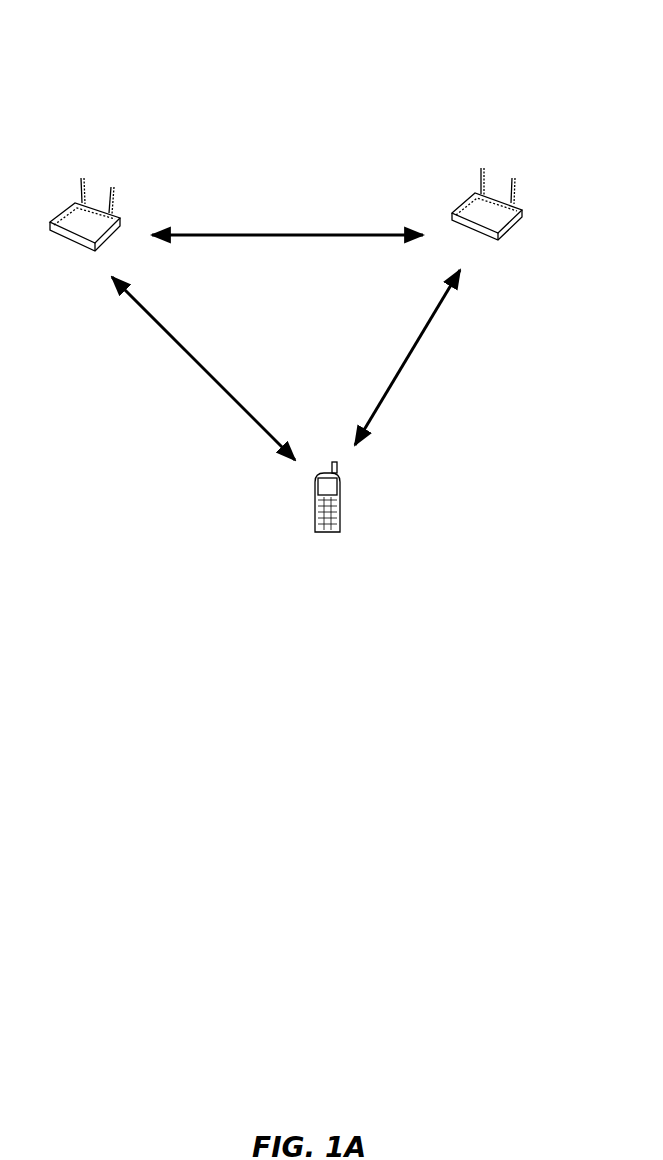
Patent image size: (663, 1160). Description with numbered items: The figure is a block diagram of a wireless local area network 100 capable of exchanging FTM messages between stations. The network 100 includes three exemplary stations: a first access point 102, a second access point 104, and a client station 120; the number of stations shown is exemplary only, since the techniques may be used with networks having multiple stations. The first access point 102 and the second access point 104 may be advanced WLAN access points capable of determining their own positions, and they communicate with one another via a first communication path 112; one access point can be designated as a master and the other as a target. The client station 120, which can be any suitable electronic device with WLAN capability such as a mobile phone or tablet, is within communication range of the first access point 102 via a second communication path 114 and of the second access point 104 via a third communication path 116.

The network 100 is at (78, 46).
The first access point 102 is at (121, 215).
The second access point 104 is at (520, 222).
The first communication path 112 is at (295, 233).
The second communication path 114 is at (173, 345).
The third communication path 116 is at (403, 367).
The client station 120 is at (310, 508).